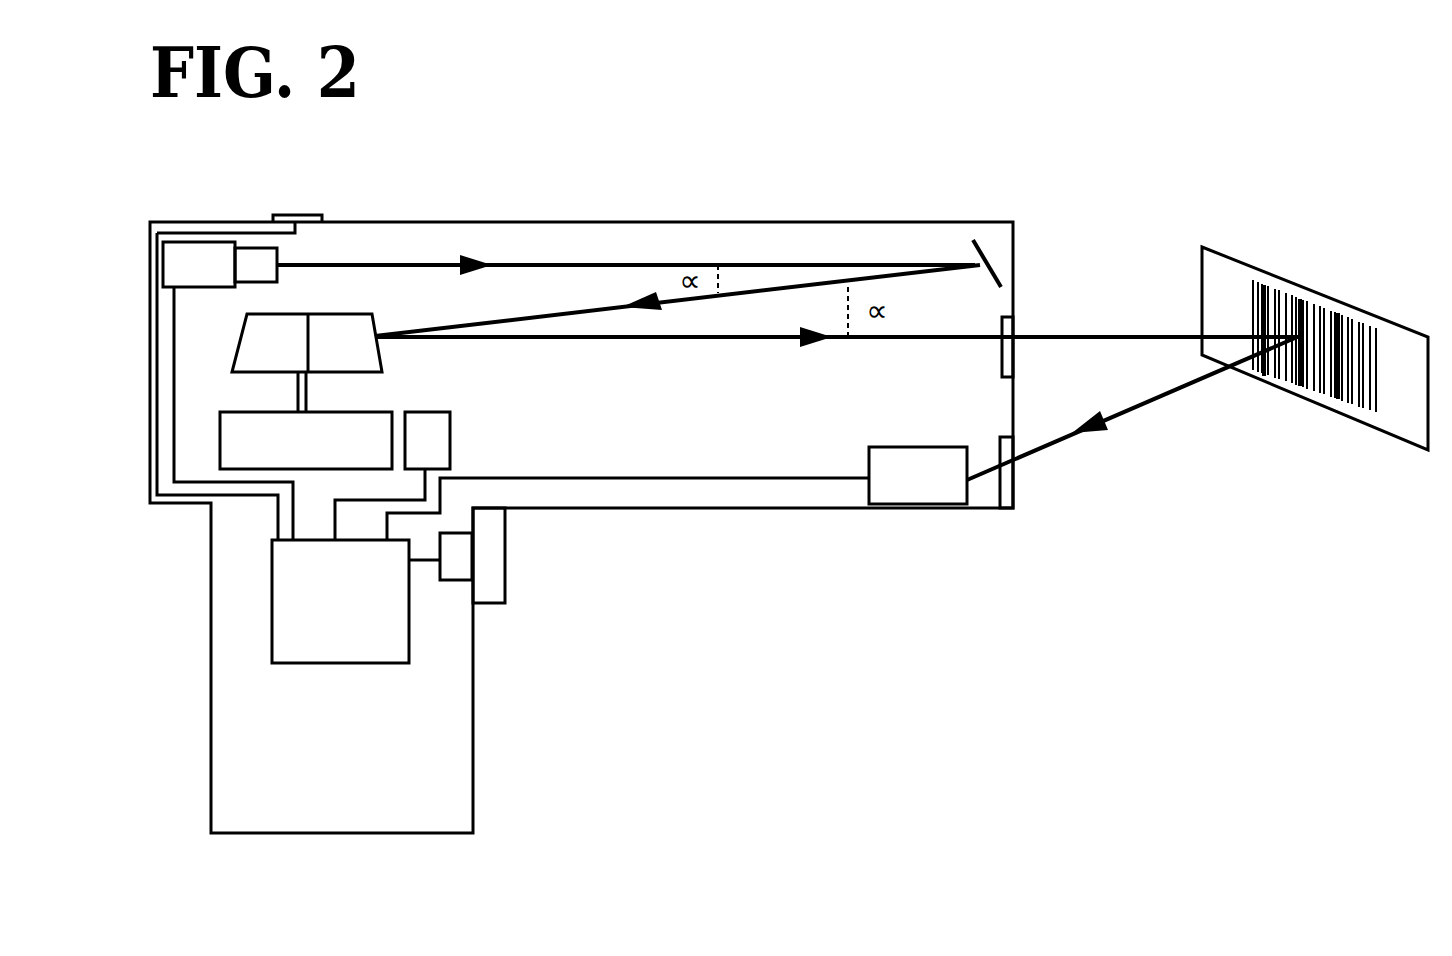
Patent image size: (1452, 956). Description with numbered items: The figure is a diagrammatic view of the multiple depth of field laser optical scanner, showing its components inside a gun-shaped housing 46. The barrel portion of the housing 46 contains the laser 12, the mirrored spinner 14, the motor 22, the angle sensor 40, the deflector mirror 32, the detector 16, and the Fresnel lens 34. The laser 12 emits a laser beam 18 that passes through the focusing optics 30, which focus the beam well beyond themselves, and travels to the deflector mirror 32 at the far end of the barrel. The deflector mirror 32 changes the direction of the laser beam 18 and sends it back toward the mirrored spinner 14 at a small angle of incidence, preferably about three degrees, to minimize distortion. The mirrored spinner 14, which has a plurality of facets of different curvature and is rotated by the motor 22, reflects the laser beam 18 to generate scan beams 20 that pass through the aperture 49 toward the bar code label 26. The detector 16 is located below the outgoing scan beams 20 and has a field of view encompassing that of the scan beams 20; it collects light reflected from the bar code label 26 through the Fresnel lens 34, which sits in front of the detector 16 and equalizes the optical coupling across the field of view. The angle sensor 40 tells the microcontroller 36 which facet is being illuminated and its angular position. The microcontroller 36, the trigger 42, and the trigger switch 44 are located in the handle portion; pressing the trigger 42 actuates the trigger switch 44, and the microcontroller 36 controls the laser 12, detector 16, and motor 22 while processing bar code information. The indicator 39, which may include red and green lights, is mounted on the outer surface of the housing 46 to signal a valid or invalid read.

The laser 12 is at (183, 242).
The mirrored spinner 14 is at (237, 338).
The detector 16 is at (913, 447).
The laser beam 18 is at (625, 265).
The scan beams 20 is at (658, 340).
The motor 22 is at (1138, 412).
The bar code label 26 is at (1288, 300).
The focusing optics 30 is at (252, 248).
The deflector mirror 32 is at (985, 262).
The Fresnel lens 34 is at (1013, 493).
The microcontroller 36 is at (350, 663).
The indicator 39 is at (308, 215).
The angle sensor 40 is at (440, 412).
The trigger 42 is at (505, 560).
The trigger switch 44 is at (455, 580).
The housing 46 is at (530, 222).
The aperture 49 is at (1012, 310).